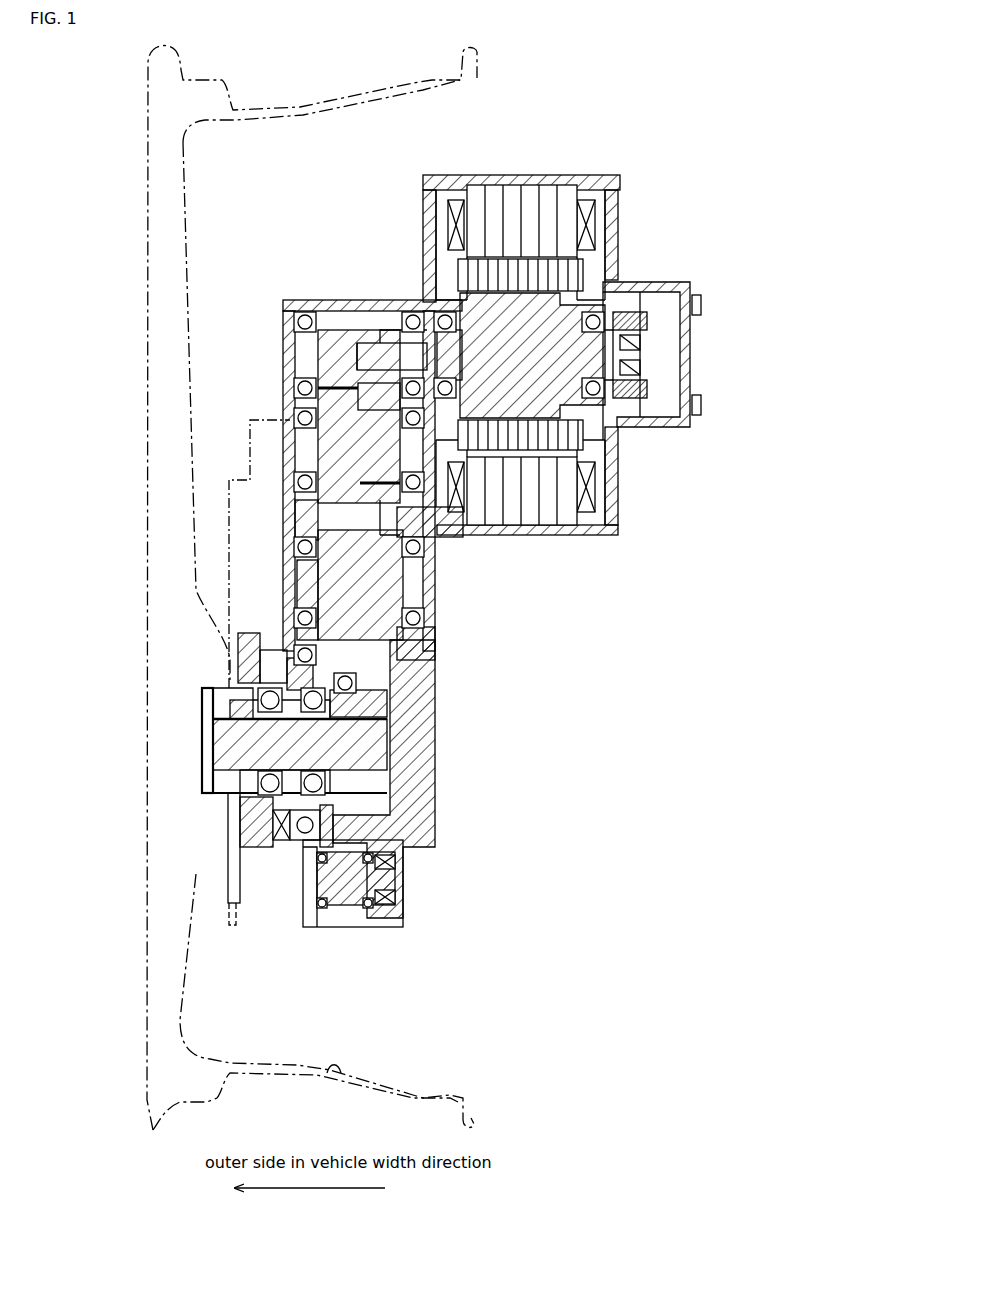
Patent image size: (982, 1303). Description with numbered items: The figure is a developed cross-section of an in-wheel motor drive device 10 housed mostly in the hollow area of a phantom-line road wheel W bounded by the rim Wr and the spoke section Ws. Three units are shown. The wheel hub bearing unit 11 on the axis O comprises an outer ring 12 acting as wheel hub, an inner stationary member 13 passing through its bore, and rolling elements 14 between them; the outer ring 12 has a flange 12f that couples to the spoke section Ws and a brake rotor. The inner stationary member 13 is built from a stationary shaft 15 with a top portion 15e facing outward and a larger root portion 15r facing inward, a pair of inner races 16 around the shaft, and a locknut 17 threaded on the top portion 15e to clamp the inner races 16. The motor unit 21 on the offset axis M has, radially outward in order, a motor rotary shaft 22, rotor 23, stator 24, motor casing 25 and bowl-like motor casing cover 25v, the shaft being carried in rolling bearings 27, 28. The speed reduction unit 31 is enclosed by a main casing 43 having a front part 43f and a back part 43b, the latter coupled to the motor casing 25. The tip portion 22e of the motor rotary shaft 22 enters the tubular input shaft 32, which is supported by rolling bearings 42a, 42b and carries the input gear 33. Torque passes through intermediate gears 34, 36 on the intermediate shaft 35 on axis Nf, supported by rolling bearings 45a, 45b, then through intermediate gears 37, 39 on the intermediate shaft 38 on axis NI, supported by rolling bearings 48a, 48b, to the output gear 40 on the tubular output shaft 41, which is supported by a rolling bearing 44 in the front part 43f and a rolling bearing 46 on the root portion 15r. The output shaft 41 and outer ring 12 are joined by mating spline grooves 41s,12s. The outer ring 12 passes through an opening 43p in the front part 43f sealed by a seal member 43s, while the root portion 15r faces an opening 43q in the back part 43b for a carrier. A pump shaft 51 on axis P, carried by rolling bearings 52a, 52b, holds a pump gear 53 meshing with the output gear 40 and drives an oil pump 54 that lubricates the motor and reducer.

The in-wheel motor drive device 10 is at (633, 158).
The wheel hub bearing unit 11 is at (198, 633).
The outer ring 12 is at (204, 790).
The flange 12f is at (243, 840).
The spline grooves 41s,12s is at (280, 672).
The inner stationary member 13 is at (197, 727).
The rolling elements 14 is at (265, 790).
The stationary shaft 15 is at (395, 735).
The top portion 15e is at (212, 740).
The root portion 15r is at (390, 752).
The inner races 16 is at (263, 702).
The locknut 17 is at (225, 742).
The motor unit 21 is at (575, 173).
The motor rotary shaft 22 is at (570, 400).
The tip portion 22e is at (385, 340).
The rotor 23 is at (575, 272).
The stator 24 is at (560, 188).
The motor casing 25 is at (512, 175).
The motor casing cover 25v is at (612, 232).
The rolling bearing 27 is at (596, 400).
The rolling bearing 28 is at (605, 410).
The speed reduction unit 31 is at (283, 352).
The input shaft 32 is at (300, 332).
The input gear 33 is at (335, 330).
The intermediate gear 34 is at (310, 412).
The intermediate shaft 35 is at (318, 440).
The intermediate gear 36 is at (440, 470).
The intermediate gear 37 is at (403, 600).
The intermediate shaft 38 is at (300, 585).
The intermediate gear 39 is at (300, 545).
The output gear 40 is at (420, 655).
The output shaft 41 is at (267, 675).
The rolling bearing 42a is at (302, 318).
The rolling bearing 42b is at (413, 315).
The main casing 43 is at (285, 305).
The back part 43b is at (435, 634).
The front part 43f is at (300, 385).
The opening 43p is at (283, 663).
The opening 43q is at (400, 712).
The seal member 43s is at (300, 838).
The rolling bearing 44 is at (265, 805).
The rolling bearing 45a is at (310, 492).
The rolling bearing 45b is at (425, 500).
The rolling bearing 46 is at (320, 825).
The rolling bearing 48a is at (300, 550).
The rolling bearing 48b is at (424, 560).
The pump shaft 51 is at (300, 900).
The rolling bearing 52a is at (320, 908).
The rolling bearing 52b is at (370, 906).
The pump gear 53 is at (340, 906).
The oil pump 54 is at (385, 904).
The axis M is at (700, 355).
The axis O is at (440, 740).
The axis P is at (405, 875).
The axis Nf is at (300, 447).
The axis NI is at (420, 588).
The road wheel W is at (150, 1138).
The spoke section Ws is at (140, 543).
The rim Wr is at (340, 1076).